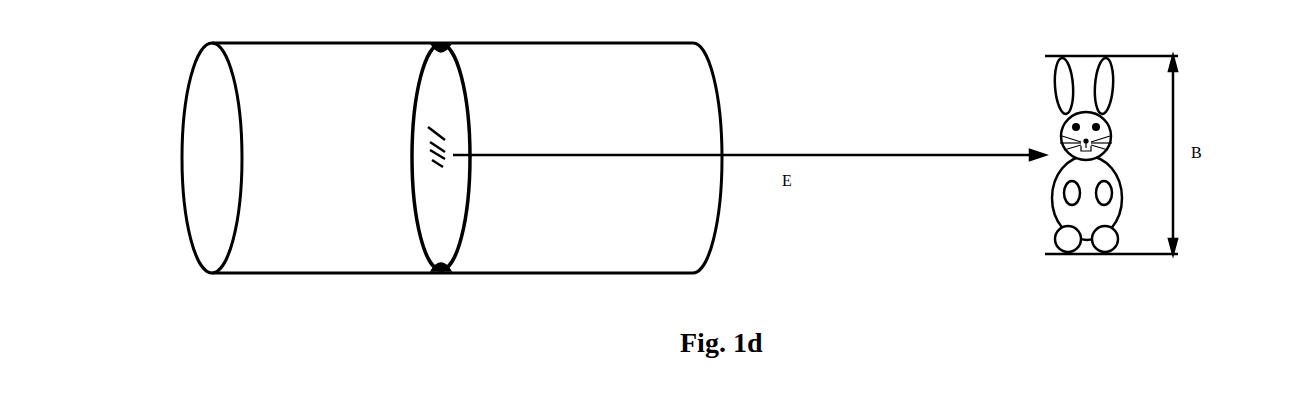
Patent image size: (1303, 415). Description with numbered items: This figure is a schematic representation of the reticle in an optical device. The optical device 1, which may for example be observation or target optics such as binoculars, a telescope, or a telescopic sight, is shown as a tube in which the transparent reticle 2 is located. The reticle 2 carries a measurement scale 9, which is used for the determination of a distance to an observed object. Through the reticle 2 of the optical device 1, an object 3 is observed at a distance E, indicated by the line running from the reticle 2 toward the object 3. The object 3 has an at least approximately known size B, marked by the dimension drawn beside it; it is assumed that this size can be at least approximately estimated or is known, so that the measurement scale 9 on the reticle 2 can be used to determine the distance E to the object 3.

The optical device 1 is at (184, 73).
The reticle 2 is at (437, 218).
The measurement scale 9 is at (428, 128).
The object 3 is at (1040, 103).